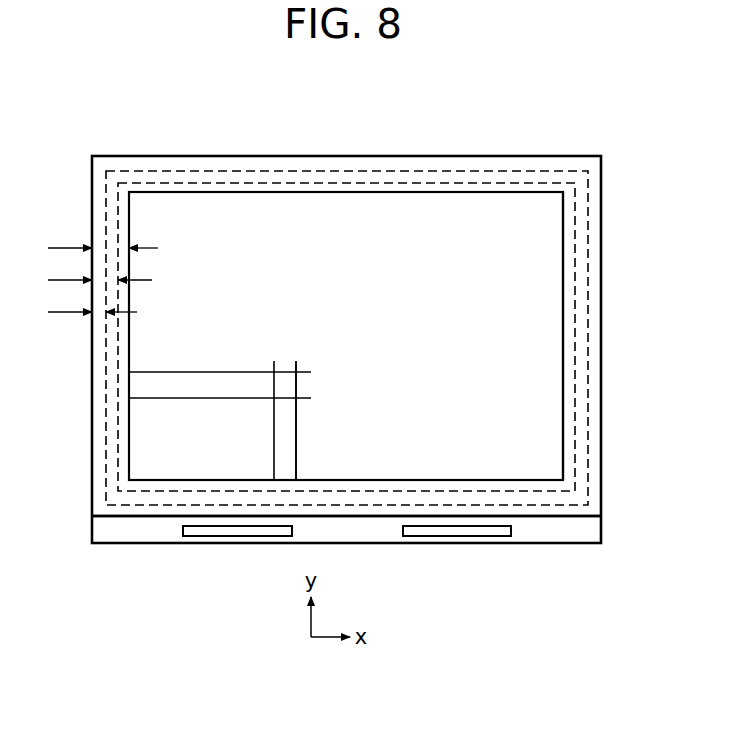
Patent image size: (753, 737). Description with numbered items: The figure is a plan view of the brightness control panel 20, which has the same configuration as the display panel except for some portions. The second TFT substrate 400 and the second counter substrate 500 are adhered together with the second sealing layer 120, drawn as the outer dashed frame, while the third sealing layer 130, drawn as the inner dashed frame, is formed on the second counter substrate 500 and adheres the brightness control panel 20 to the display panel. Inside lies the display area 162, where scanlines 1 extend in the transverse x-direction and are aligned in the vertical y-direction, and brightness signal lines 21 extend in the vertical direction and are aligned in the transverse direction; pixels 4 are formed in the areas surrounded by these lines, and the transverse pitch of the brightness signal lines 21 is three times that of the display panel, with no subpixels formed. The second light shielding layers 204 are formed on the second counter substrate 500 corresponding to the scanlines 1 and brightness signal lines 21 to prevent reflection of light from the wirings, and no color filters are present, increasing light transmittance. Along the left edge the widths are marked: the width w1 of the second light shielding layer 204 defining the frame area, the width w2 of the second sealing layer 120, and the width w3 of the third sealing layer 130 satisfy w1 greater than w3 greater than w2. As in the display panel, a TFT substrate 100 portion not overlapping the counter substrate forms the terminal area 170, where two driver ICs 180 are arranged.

The brightness control panel 20 is at (97, 128).
The first TFT substrate 100 is at (469, 225).
The second sealing layer 120 is at (589, 263).
The third sealing layer 130 is at (579, 297).
The display area 162 is at (380, 311).
The second light shielding layer 204 is at (563, 330).
The second counter substrate 500 is at (602, 375).
The second TFT substrate 400 is at (601, 532).
The first terminal area 170 is at (533, 532).
The first driver IC 180 is at (447, 536).
The scanline 1 is at (180, 372).
The pixel 4 is at (285, 378).
The brightness signal line 21 is at (296, 442).
The width of the second light shielding layer w1 is at (103, 234).
The width of the second sealing layer w2 is at (92, 298).
The width of the third sealing layer w3 is at (100, 266).